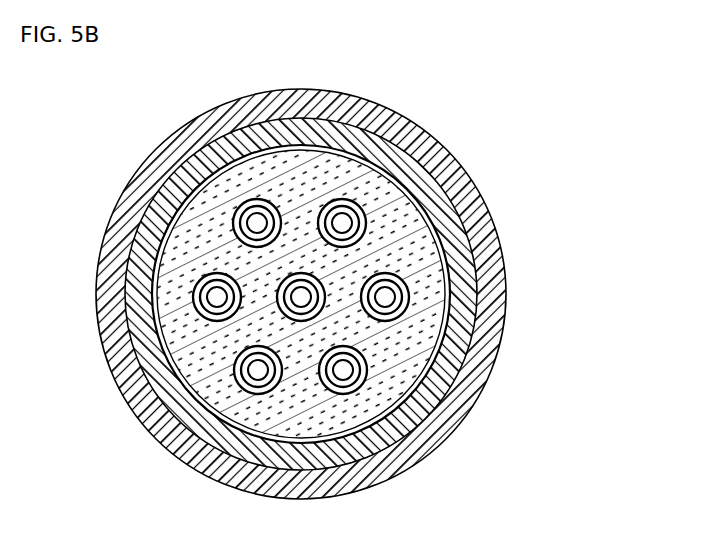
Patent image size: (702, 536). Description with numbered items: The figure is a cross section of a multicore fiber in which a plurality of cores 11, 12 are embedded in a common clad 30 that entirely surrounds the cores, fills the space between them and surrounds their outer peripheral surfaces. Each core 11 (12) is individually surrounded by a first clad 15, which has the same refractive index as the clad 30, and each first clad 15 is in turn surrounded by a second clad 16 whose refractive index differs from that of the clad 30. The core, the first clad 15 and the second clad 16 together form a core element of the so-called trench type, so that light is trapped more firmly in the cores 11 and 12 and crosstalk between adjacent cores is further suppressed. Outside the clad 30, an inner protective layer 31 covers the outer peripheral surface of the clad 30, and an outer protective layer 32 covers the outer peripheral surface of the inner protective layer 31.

The core 11 is at (302, 297).
The core 12 is at (250, 222).
The first clad 15 is at (210, 174).
The second clad 16 is at (228, 166).
The clad 30 is at (357, 173).
The inner protective layer 31 is at (436, 242).
The outer protective layer 32 is at (443, 173).